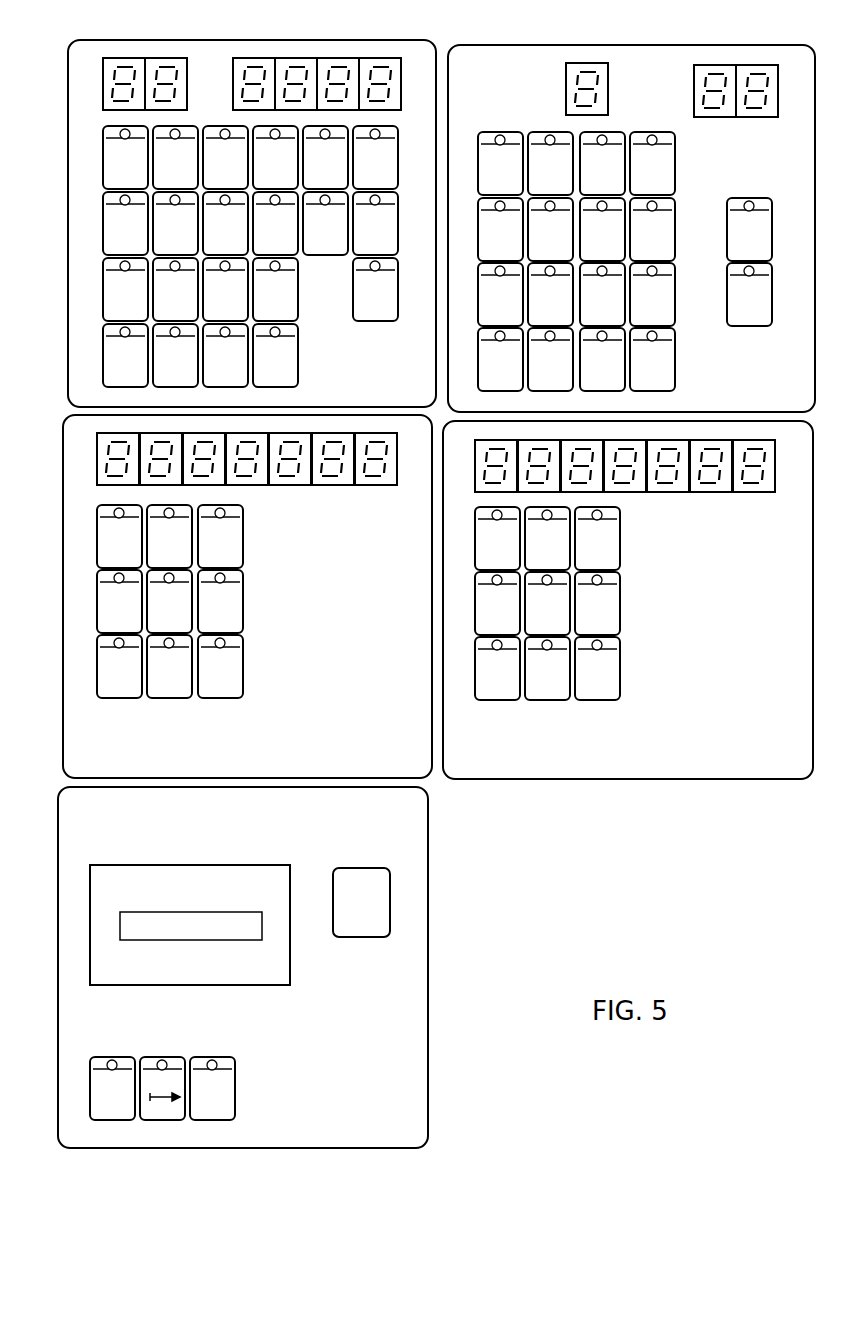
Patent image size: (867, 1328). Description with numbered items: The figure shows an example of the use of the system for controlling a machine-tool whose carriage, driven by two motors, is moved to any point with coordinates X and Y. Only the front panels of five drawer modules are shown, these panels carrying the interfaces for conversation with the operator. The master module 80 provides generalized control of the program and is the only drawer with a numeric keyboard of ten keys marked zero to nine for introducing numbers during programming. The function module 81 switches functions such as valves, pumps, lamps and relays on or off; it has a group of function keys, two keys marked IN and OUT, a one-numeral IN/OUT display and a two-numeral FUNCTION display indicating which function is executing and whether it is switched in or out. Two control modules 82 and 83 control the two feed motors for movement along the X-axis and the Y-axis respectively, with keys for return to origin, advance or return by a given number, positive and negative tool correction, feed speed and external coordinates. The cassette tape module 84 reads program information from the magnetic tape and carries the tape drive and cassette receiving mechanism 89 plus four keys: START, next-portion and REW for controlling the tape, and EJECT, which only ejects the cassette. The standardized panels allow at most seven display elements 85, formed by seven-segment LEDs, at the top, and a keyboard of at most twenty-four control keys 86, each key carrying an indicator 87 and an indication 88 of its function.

The master module 80 is at (239, 211).
The function module 81 is at (758, 360).
The control module 82 is at (345, 717).
The control module 83 is at (732, 717).
The cassette tape module 84 is at (243, 967).
The display elements 85 is at (128, 60).
The control keys 86 is at (95, 181).
The indicator 87 is at (120, 132).
The indication 88 is at (122, 178).
The tape drive and cassette receiving mechanism 89 is at (190, 876).